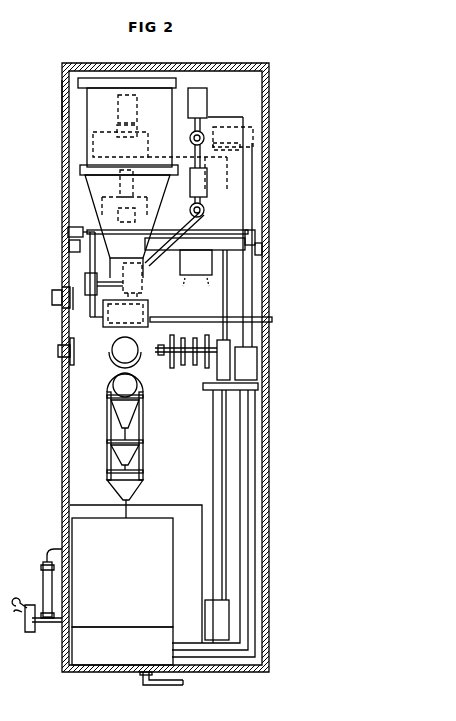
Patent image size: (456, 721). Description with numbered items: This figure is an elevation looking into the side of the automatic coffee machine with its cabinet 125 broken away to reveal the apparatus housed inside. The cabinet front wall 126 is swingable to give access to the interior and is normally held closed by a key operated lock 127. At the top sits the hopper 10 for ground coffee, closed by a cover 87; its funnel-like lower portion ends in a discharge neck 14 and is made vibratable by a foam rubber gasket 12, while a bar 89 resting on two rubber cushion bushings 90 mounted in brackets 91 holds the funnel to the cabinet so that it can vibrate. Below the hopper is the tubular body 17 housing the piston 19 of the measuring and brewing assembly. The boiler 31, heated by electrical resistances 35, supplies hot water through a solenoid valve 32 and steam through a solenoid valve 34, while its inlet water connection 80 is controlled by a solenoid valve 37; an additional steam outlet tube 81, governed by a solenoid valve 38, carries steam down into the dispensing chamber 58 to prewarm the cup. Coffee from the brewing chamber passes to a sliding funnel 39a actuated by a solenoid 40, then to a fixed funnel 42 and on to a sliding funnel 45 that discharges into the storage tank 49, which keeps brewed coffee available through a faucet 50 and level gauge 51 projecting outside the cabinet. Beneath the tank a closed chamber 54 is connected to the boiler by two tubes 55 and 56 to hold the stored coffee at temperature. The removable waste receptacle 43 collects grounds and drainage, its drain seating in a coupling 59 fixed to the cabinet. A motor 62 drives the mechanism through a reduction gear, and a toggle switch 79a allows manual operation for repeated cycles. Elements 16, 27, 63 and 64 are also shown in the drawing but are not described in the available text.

The cabinet 125 is at (148, 63).
The cabinet front wall 126 is at (64, 100).
The cover 87 is at (176, 84).
The hopper 10 is at (165, 112).
The solenoid valve 38 is at (118, 109).
The steam outlet tube 81 is at (222, 490).
The foam rubber gasket 12 is at (155, 170).
The solenoid valve 34 is at (205, 106).
The tube 55 is at (243, 143).
The solenoid valve 37 is at (122, 192).
The boiler 31 is at (182, 221).
The solenoid valve 32 is at (207, 188).
The bar 89 is at (218, 238).
The rubber cushion bushing 90 is at (68, 232).
The bracket 91 is at (69, 248).
The discharge neck 14 is at (143, 277).
The heater 35 is at (198, 232).
The valve connector 16 is at (142, 312).
The control box 27 is at (140, 310).
The switch 79a is at (55, 304).
The water feed tube 80 is at (272, 318).
The key operated lock 127 is at (58, 352).
The tubular body 17 is at (122, 355).
The piston 19 is at (116, 382).
The cam shaft 63 is at (188, 362).
The motor 62 is at (250, 366).
The solenoid 40 is at (122, 392).
The cup column 64 is at (143, 394).
The sliding funnel 39a is at (131, 426).
The fixed funnel 42 is at (131, 452).
The waste deposit receptacle 43 is at (200, 457).
The sliding funnel 45 is at (131, 488).
The storage tank 49 is at (126, 553).
The dispensing chamber 58 is at (194, 574).
The level gauge 51 is at (42, 582).
The faucet 50 is at (28, 628).
The closed chamber 54 is at (124, 654).
The tube 56 is at (238, 634).
The coupling 59 is at (143, 682).